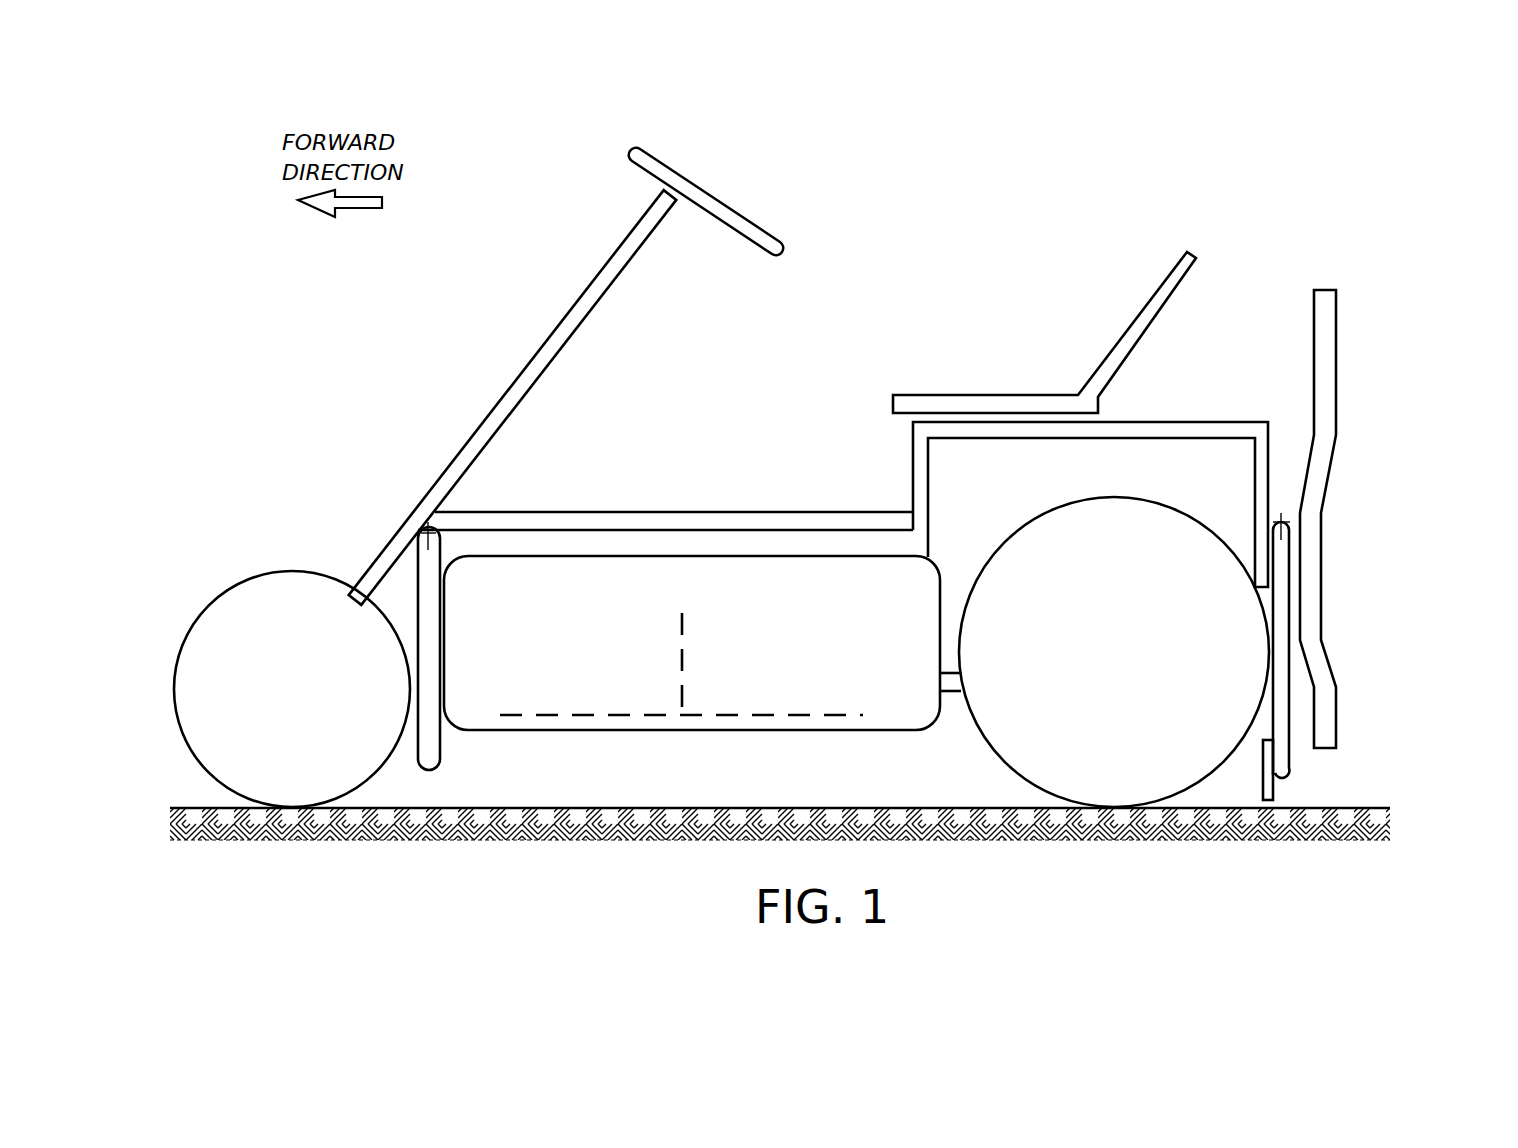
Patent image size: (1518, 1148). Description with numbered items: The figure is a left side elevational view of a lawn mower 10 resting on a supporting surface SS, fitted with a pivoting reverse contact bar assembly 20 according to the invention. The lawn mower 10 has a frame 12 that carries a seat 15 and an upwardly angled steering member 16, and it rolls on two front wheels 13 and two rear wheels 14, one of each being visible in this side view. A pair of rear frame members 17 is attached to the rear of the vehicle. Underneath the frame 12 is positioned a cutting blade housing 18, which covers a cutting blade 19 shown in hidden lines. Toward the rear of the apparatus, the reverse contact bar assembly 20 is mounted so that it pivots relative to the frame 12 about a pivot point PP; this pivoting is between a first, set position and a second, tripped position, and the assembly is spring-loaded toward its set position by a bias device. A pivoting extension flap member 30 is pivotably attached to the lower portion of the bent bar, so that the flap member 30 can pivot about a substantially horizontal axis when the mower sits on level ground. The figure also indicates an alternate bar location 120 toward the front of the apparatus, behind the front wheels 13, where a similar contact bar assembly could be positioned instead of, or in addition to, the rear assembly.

The lawn mower 10 is at (938, 226).
The frame 12 is at (728, 515).
The front wheels 13 is at (252, 598).
The rear wheels 14 is at (1020, 763).
The seat 15 is at (1155, 300).
The steering member 16 is at (722, 205).
The rear frame members 17 is at (1327, 318).
The cutting blade housing 18 is at (610, 580).
The cutting blade 19 is at (708, 716).
The reverse contact bar assembly 20 is at (1283, 661).
The pivoting extension flap member 30 is at (1272, 793).
The alternate contact bar assembly location 120 is at (428, 572).
The pivot point PP is at (1284, 520).
The supporting surface SS is at (688, 846).